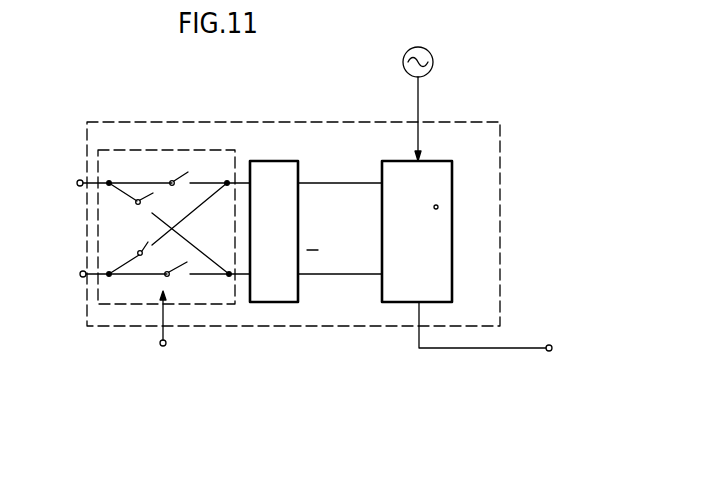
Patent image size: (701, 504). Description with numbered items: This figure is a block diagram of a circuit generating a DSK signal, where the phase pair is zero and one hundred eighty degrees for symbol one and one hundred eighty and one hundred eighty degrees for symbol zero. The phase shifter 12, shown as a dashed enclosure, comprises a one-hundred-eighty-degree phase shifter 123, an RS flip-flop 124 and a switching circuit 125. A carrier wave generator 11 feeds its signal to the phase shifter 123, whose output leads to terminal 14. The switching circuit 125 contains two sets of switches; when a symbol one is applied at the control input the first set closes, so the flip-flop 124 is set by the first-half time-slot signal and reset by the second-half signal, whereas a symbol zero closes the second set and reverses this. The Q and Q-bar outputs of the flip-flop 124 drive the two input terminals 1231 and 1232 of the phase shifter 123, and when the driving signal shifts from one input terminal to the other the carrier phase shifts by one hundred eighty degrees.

The carrier wave generator 11 is at (431, 55).
The phase shifter 12 is at (284, 121).
The 180° phase shifter 123 is at (452, 161).
The RS flip-flop 124 is at (298, 161).
The switching circuit 125 is at (226, 150).
The input terminal 1231 is at (382, 176).
The input terminal 1232 is at (382, 273).
The output terminal 14 is at (552, 349).